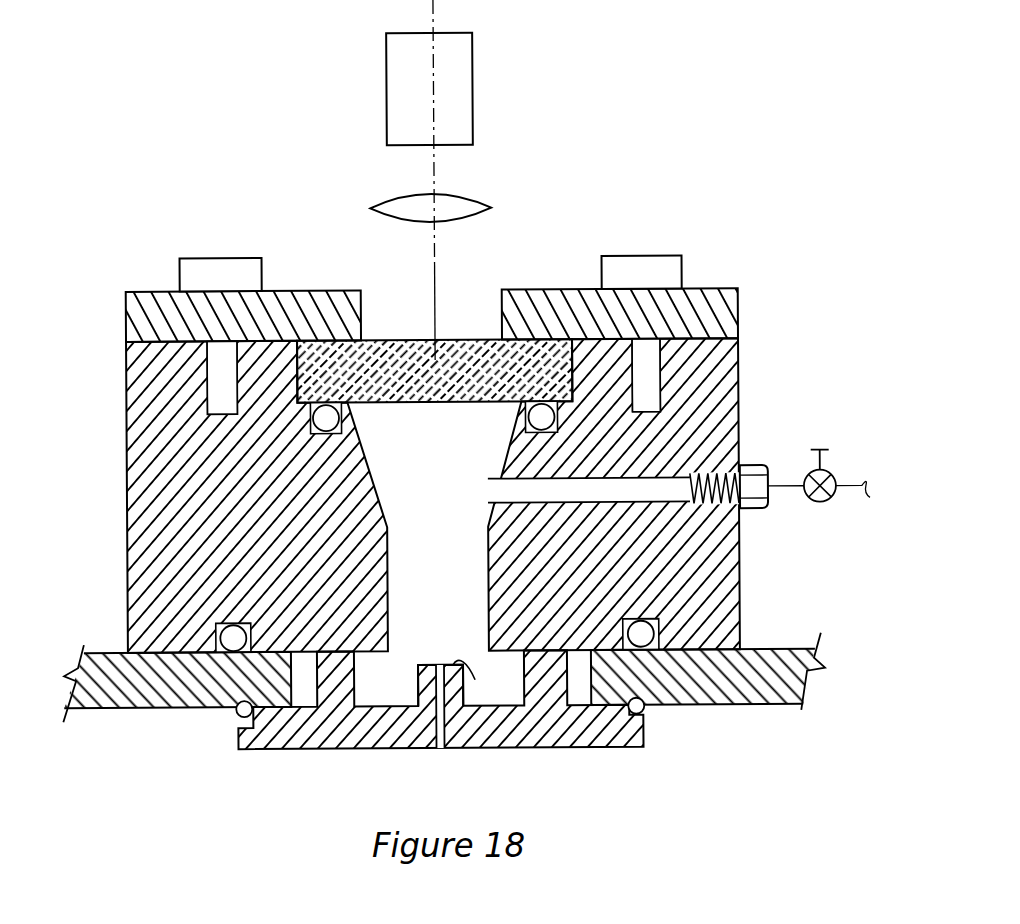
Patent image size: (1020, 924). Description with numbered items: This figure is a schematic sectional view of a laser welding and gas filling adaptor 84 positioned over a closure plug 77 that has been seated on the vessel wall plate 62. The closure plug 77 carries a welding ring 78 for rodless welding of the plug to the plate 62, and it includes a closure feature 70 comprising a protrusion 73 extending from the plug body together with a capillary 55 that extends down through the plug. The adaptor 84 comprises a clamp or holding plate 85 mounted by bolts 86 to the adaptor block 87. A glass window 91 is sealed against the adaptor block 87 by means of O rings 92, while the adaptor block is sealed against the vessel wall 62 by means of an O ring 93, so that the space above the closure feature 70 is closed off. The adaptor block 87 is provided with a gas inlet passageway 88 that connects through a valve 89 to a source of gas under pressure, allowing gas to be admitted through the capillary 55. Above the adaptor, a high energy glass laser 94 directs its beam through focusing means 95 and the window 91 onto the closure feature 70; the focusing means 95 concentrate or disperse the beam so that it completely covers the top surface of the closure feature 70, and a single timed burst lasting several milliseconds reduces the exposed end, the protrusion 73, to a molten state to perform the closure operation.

The laser welding and gas filling adaptor 84 is at (625, 151).
The high energy glass laser 94 is at (468, 63).
The focusing means 95 is at (478, 200).
The glass window 91 is at (458, 342).
The bolts 86 is at (680, 258).
The clamp or holding plate 85 is at (732, 300).
The adaptor block 87 is at (730, 388).
The O rings 92 is at (313, 423).
The O ring 93 is at (660, 632).
The gas inlet passageway 88 is at (670, 505).
The valve 89 is at (827, 470).
The closure feature 70 is at (424, 662).
The capillary 55 is at (457, 750).
The protrusion 73 is at (474, 680).
The plate 62 is at (798, 662).
The welding ring 78 is at (645, 706).
The closure plug 77 is at (633, 748).